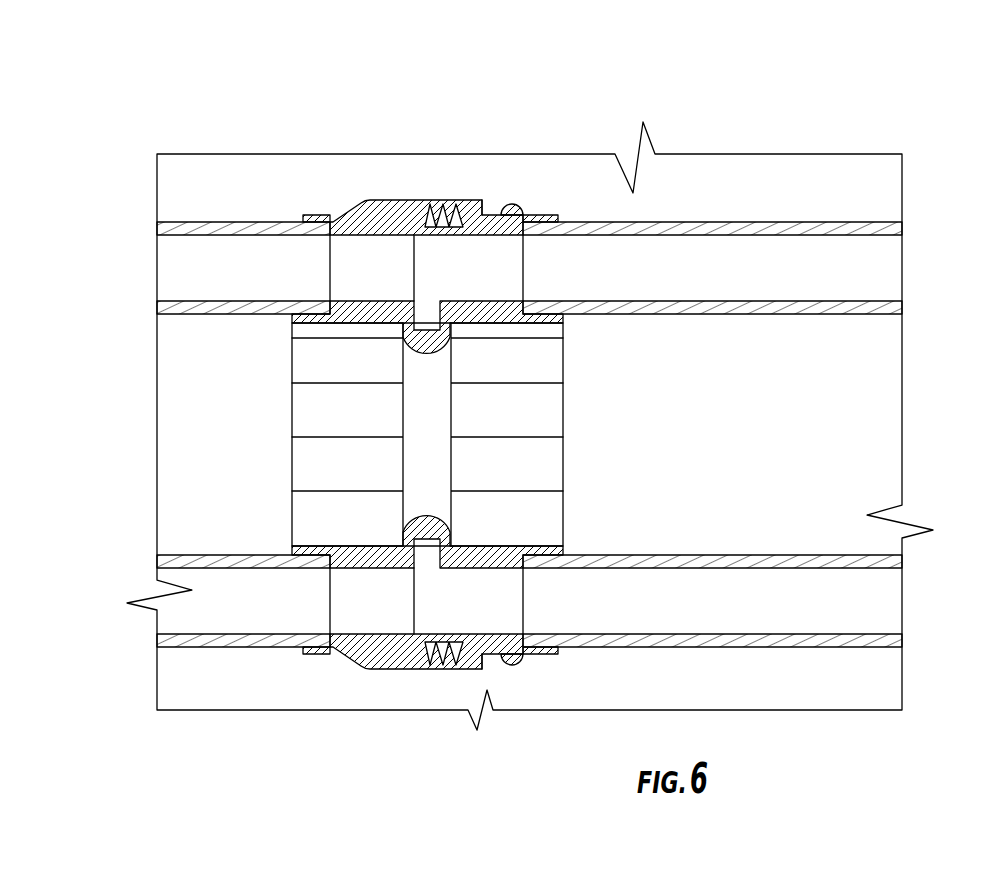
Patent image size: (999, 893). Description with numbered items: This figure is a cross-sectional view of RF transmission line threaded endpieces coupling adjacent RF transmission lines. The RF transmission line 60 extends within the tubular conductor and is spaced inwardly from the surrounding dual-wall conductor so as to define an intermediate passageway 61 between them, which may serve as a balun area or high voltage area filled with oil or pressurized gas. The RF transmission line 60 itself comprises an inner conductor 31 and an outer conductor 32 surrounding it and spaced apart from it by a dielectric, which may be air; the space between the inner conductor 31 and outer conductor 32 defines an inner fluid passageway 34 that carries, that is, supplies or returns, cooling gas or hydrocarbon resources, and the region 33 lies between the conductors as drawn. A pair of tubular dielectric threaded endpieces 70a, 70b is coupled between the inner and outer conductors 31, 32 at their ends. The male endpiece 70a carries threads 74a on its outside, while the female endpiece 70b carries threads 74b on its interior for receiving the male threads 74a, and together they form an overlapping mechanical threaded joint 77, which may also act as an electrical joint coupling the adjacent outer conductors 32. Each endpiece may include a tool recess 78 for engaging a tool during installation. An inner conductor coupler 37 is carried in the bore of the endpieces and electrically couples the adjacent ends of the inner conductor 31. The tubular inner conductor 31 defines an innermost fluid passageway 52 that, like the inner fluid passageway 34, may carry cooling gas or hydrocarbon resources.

The RF transmission line 60 is at (810, 222).
The intermediate passageway 61 is at (737, 172).
The inner conductor 31 is at (903, 310).
The outer conductor 32 is at (903, 228).
The gap between skins 33 is at (163, 263).
The inner fluid passageway 34 is at (897, 277).
The inner conductor coupler 37 is at (292, 457).
The innermost fluid passageway 52 is at (170, 486).
The male RF transmission line threaded endpiece 70a is at (512, 196).
The female RF transmission line threaded endpiece 70b is at (330, 195).
The male threads 74a is at (413, 233).
The female threads 74b is at (423, 197).
The overlapping mechanical threaded joint 77 is at (472, 200).
The tool recess 78 is at (493, 202).